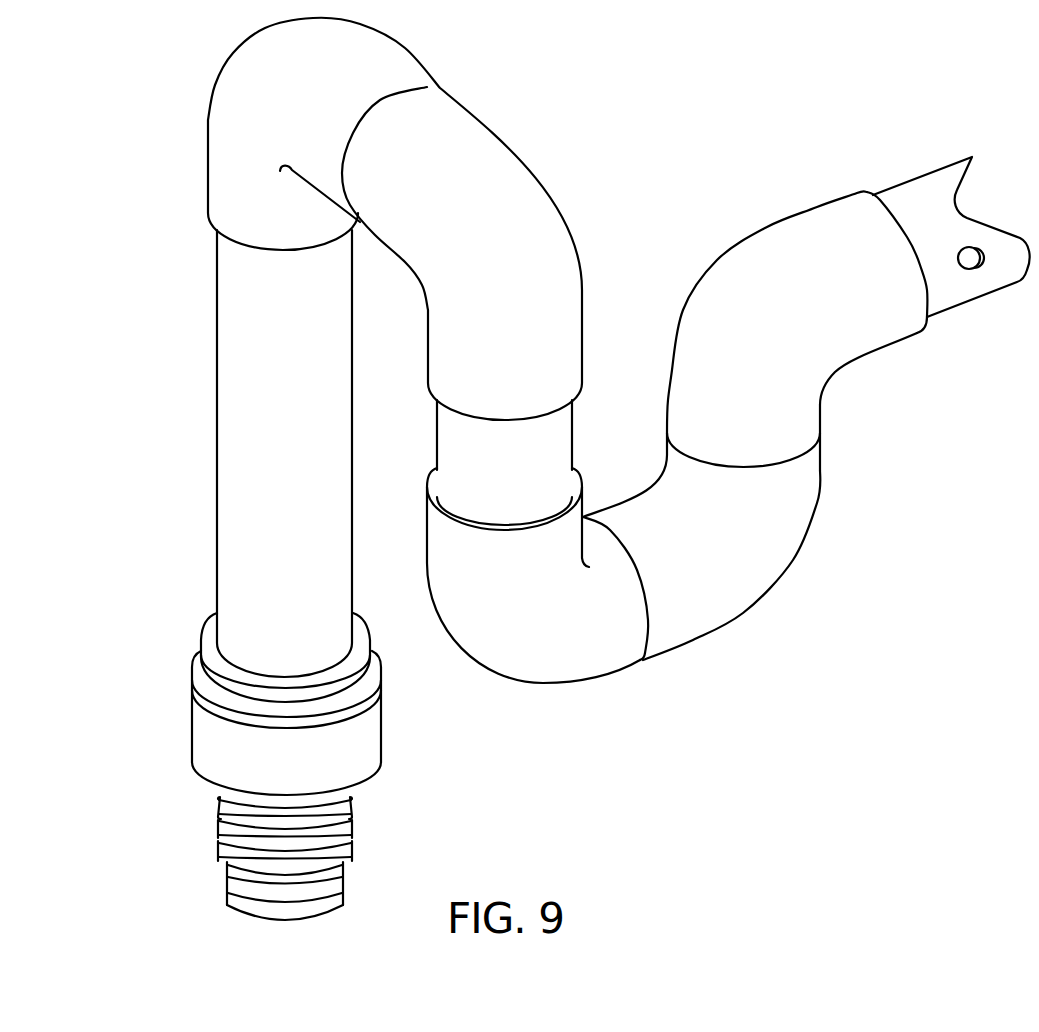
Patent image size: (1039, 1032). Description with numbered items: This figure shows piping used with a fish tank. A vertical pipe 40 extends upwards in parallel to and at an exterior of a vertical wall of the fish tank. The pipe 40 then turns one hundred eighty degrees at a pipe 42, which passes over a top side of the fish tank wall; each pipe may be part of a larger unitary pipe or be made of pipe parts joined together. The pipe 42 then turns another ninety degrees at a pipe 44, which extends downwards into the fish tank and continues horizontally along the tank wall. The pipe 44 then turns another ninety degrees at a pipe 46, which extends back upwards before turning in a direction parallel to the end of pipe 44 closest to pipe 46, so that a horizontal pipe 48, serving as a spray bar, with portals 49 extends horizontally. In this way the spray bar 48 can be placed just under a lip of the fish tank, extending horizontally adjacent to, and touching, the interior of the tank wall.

The vertical pipe 40 is at (220, 317).
The pipe 42 is at (235, 162).
The pipe 44 is at (582, 613).
The pipe 46 is at (770, 490).
The horizontal pipe (spray bar) 48 is at (922, 183).
The portals 49 is at (972, 255).